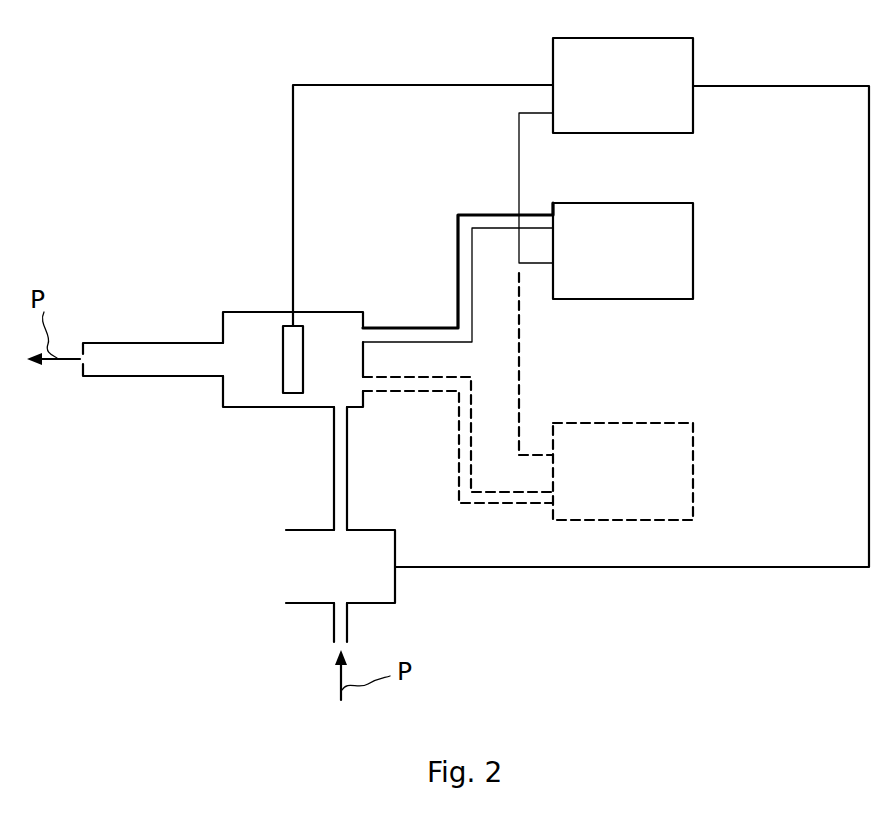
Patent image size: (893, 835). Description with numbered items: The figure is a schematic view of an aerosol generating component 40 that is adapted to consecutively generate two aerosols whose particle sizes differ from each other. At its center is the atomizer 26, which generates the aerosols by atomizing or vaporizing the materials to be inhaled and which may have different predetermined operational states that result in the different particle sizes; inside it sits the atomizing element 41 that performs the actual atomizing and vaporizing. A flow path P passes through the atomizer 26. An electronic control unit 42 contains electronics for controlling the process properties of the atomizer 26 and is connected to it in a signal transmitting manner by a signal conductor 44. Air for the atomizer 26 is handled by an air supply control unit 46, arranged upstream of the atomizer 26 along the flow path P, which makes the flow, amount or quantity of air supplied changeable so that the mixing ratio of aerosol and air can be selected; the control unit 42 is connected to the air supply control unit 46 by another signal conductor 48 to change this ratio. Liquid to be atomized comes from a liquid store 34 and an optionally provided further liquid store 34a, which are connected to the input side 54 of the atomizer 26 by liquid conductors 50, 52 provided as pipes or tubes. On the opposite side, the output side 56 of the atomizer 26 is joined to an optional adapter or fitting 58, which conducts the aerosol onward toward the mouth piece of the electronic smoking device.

The aerosol generating component 40 is at (141, 82).
The atomizer 26 is at (187, 309).
The output side 56 is at (293, 359).
The atomizing element 41 is at (283, 360).
The signal conductor 44 is at (340, 85).
The electronic control unit 42 is at (693, 58).
The liquid store 34 is at (693, 220).
The liquid conductor 50 is at (457, 262).
The input side 54 is at (375, 316).
The liquid conductor 52 is at (458, 446).
The liquid store 34a is at (693, 432).
The air supply control unit 46 is at (395, 583).
The signal conductor 48 is at (630, 567).
The adapter or fitting 58 is at (130, 377).